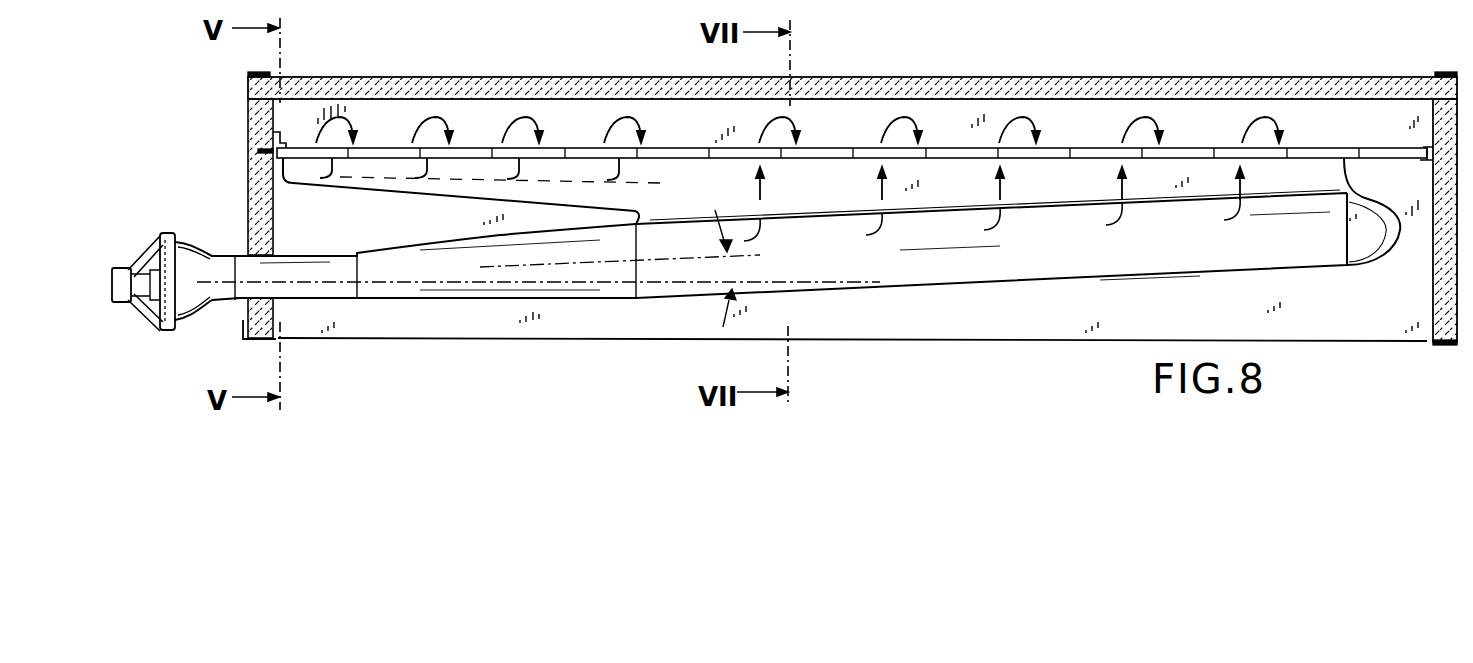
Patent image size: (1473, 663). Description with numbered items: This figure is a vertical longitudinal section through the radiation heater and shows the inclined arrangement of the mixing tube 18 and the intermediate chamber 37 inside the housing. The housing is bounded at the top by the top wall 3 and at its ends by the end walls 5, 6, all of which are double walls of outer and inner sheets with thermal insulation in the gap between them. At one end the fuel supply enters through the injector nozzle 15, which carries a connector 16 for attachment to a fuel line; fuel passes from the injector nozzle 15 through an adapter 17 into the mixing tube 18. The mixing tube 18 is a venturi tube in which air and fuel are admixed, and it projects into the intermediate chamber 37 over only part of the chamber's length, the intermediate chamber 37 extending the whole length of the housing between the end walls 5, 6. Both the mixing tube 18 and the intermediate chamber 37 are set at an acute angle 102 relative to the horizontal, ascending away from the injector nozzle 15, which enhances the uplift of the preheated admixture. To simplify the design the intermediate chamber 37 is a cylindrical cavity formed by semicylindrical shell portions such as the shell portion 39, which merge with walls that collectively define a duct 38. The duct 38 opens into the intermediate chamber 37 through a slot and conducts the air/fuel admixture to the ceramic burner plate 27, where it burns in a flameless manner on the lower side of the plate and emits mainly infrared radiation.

The top wall 3 is at (910, 72).
The end wall 5 is at (1421, 266).
The end wall 6 is at (286, 216).
The injector nozzle 15 is at (168, 236).
The connector 16 is at (129, 298).
The adapter 17 is at (200, 258).
The mixing tube 18 is at (498, 285).
The ceramic burner plate 27 is at (1093, 157).
The intermediate chamber 37 is at (1080, 288).
The duct 38 is at (953, 182).
The semicylindrical shell portion 39 is at (1228, 258).
The acute angle 102 is at (737, 265).